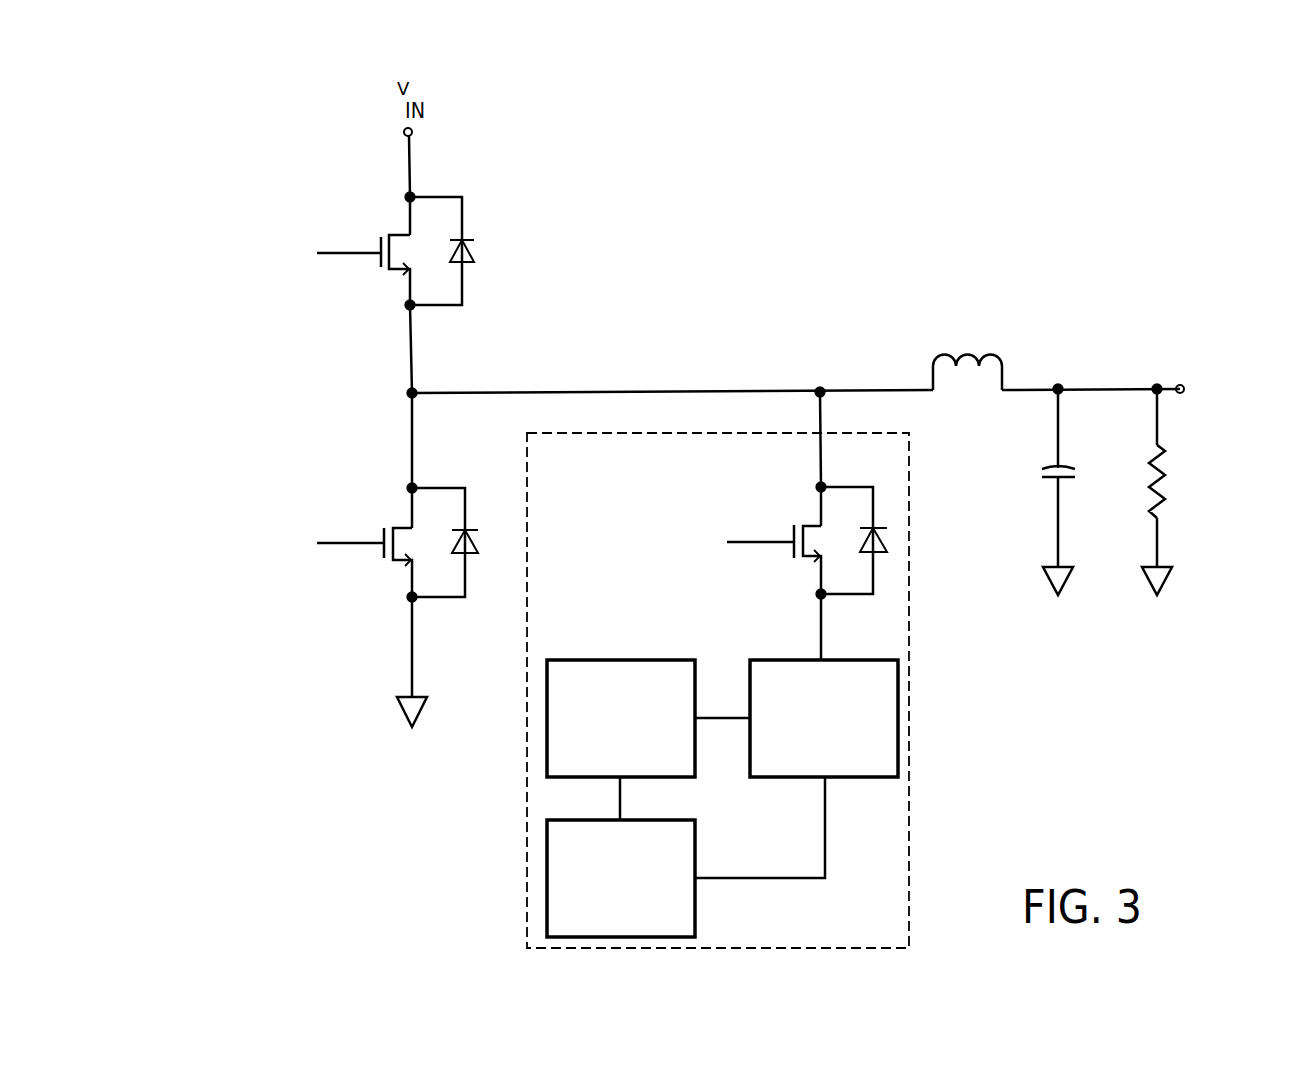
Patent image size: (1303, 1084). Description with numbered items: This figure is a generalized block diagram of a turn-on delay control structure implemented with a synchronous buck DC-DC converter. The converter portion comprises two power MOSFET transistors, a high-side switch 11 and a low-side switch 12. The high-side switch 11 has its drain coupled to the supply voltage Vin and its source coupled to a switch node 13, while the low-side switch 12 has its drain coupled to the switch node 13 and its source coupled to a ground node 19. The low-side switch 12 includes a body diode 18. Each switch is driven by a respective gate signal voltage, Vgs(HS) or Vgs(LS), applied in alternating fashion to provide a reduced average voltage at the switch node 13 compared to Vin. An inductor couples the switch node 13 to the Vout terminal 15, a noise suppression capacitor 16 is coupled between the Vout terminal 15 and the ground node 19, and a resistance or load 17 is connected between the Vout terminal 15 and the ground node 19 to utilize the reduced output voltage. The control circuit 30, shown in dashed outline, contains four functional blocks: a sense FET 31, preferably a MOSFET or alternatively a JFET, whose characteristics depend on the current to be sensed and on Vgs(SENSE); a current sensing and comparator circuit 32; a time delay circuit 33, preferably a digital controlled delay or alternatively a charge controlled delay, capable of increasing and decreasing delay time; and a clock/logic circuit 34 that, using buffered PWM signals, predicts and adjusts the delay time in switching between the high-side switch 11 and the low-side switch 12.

The high-side switch 11 is at (381, 245).
The low-side switch 12 is at (383, 535).
The switch node 13 is at (409, 392).
The Vout terminal 15 is at (1178, 383).
The noise suppression capacitor 16 is at (1063, 468).
The load 17 is at (1163, 448).
The body diode 18 is at (475, 530).
The ground node 19 is at (405, 697).
The control circuit 30 is at (912, 883).
The sense FET 31 is at (793, 550).
The current sensing and comparator circuit 32 is at (840, 778).
The time delay circuit 33 is at (583, 660).
The clock/logic circuit 34 is at (697, 858).